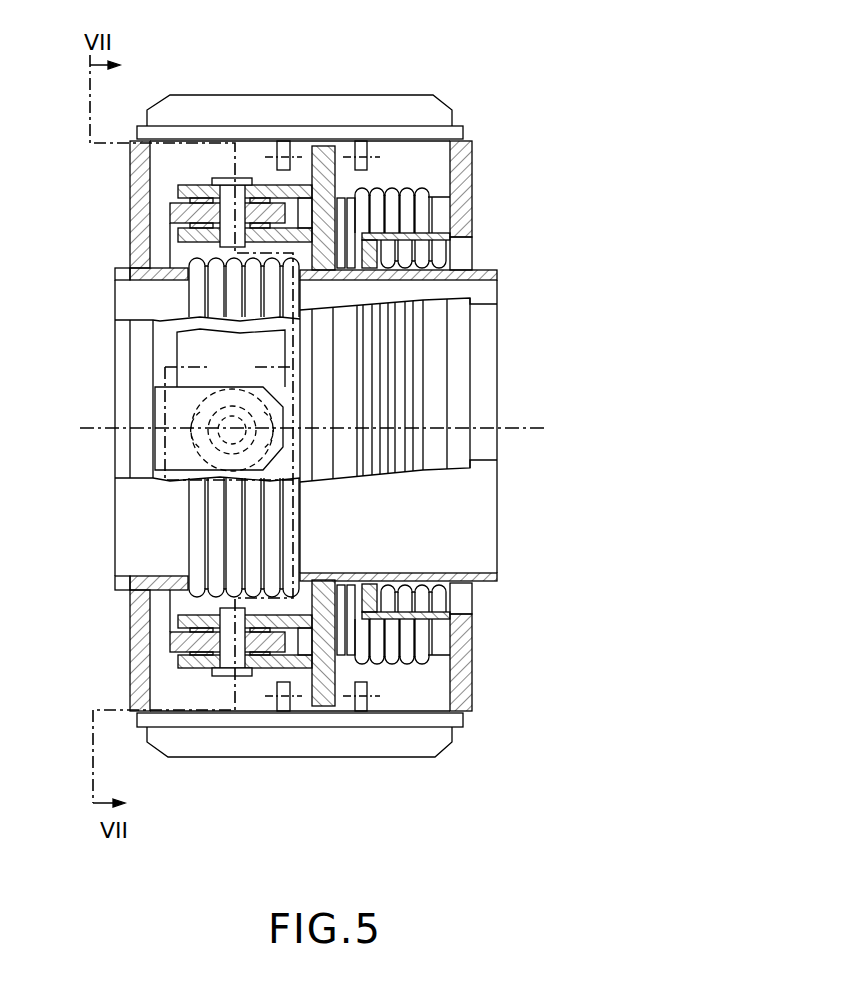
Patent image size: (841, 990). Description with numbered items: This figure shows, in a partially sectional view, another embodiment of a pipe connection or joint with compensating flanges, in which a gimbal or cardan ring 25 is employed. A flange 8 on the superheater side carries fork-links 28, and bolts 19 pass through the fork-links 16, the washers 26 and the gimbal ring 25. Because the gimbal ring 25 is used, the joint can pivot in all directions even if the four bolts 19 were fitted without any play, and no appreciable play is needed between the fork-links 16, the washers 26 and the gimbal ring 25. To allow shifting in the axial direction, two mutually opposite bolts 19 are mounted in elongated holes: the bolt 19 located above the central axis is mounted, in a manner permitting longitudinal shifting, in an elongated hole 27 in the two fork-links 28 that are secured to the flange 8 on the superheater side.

The bolt 19 is at (235, 180).
The washer 26 is at (178, 192).
The gimbal ring 25 is at (195, 220).
The fork-link 28 is at (170, 413).
The elongated hole 27 is at (202, 435).
The flange 8 is at (140, 600).
The fork-link 16 is at (180, 662).